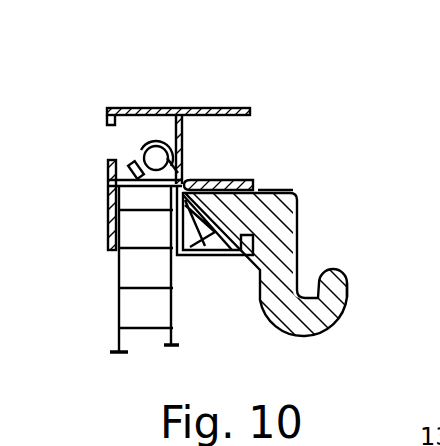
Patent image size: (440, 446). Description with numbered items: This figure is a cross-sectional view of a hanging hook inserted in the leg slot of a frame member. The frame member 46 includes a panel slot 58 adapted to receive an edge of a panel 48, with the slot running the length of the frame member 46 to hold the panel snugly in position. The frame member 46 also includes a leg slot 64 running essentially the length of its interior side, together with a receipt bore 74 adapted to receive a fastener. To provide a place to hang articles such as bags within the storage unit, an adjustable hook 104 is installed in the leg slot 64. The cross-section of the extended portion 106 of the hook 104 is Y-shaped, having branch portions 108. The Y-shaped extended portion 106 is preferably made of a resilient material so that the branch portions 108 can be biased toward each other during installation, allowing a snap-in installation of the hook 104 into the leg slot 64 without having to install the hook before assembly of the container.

The frame member 46 is at (191, 98).
The receipt bore 74 is at (123, 155).
The panel 48 is at (117, 298).
The panel slot 58 is at (220, 152).
The branch portions 108 is at (222, 255).
The leg slot 64 is at (266, 186).
The extended portion 106 is at (313, 196).
The adjustable hook 104 is at (351, 291).